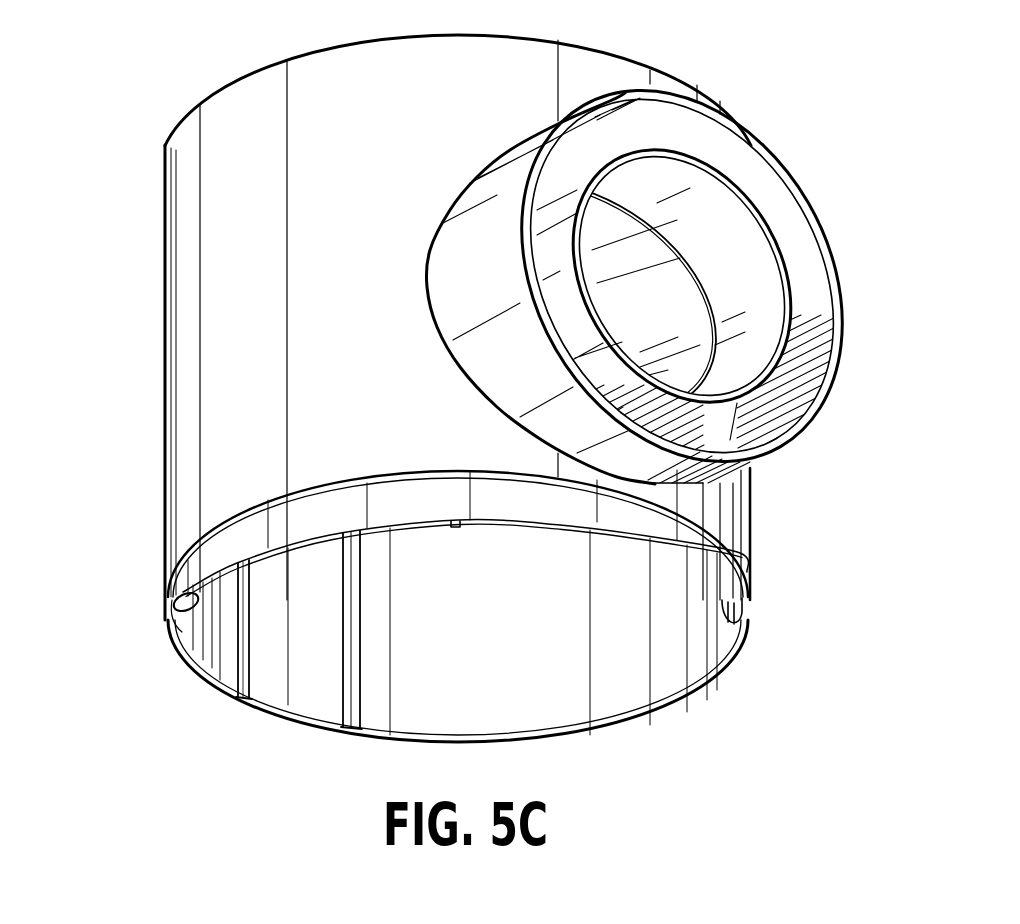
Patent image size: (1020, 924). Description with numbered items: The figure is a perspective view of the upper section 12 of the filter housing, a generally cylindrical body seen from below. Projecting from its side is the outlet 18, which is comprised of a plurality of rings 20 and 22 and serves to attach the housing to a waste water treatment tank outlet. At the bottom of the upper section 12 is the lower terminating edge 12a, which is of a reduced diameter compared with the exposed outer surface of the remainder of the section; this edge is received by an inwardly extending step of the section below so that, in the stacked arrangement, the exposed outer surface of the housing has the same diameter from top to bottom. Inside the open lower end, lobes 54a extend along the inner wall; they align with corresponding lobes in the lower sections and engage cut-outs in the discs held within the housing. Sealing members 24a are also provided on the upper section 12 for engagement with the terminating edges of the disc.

The upper section 12 is at (118, 283).
The lower terminating edge 12a is at (179, 606).
The outlet 18 is at (628, 88).
The ring 20 is at (777, 153).
The ring 22 is at (788, 302).
The sealing member 24a is at (455, 529).
The lobe 54a is at (236, 657).